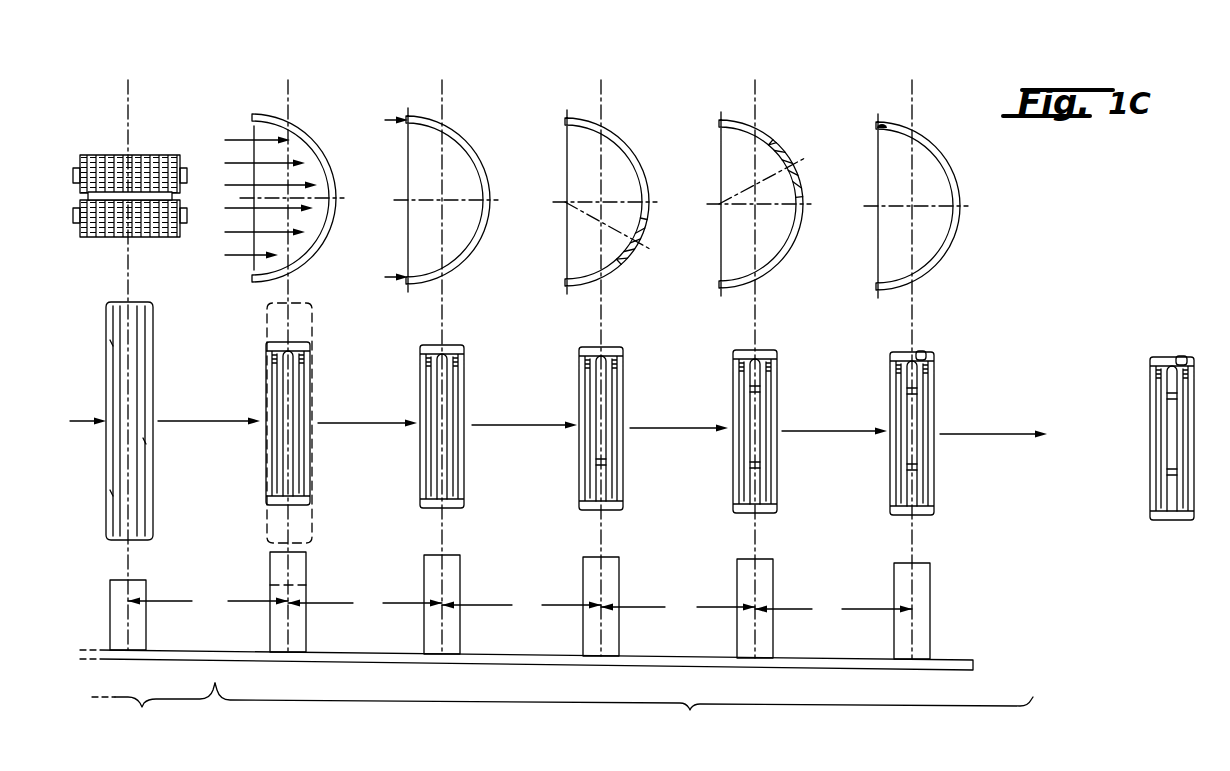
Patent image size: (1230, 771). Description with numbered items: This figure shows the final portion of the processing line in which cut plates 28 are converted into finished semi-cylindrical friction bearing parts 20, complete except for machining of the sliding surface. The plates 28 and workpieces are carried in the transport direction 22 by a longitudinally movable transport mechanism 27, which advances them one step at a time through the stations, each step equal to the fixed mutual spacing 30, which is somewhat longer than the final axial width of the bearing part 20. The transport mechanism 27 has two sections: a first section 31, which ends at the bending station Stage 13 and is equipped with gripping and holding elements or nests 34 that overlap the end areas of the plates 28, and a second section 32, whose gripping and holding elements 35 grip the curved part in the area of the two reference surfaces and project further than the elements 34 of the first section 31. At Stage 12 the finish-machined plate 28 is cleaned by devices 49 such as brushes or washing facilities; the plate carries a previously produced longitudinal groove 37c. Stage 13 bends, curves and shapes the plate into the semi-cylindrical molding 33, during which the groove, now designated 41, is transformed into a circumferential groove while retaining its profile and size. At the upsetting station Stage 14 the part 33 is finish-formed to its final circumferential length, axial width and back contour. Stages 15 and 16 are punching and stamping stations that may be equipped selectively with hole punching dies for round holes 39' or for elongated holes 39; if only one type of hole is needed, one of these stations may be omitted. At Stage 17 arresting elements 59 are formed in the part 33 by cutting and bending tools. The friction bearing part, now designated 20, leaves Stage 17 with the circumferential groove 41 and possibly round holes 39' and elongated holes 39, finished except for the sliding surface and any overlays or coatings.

The Stage 12 is at (128, 338).
The Stage 13 is at (288, 339).
The Stage 14 is at (442, 340).
The Stage 15 is at (601, 341).
The Stage 16 is at (755, 342).
The Stage 17 is at (912, 342).
The friction bearing part 20 is at (1163, 523).
The transport direction 22 is at (558, 416).
The transport mechanism 27 is at (510, 663).
The plates 28 is at (104, 199).
The spacing 30 is at (520, 606).
The first section 31 is at (153, 710).
The second section 32 is at (624, 715).
The semi-cylindrical friction bearing molding 33 is at (313, 148).
The gripping and holding elements 34 is at (148, 623).
The gripping and holding elements 35 is at (306, 566).
The coiled sheet 37c is at (124, 396).
The elongated holes 39 is at (974, 275).
The round holes 39' is at (897, 340).
The groove 41 is at (293, 395).
The devices 49 is at (160, 167).
The arresting elements 59 is at (878, 122).